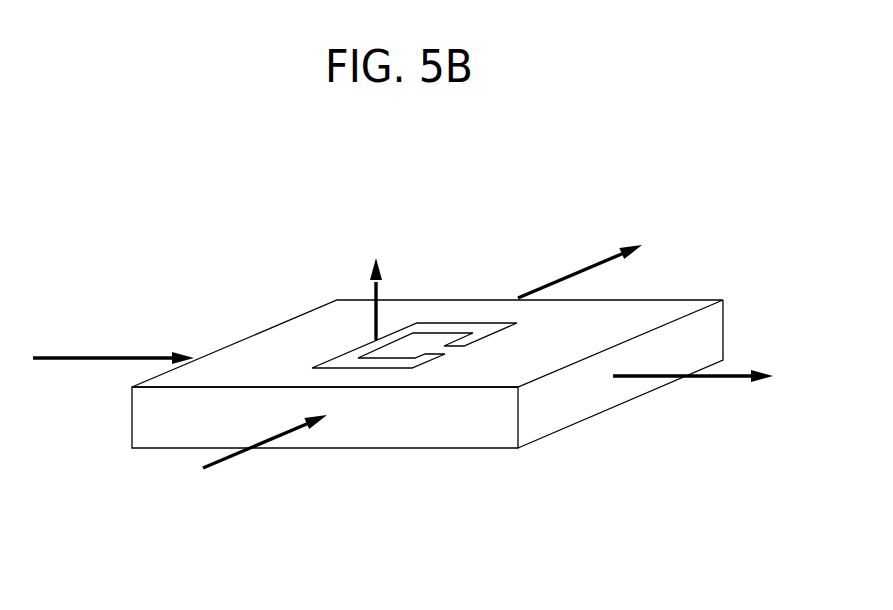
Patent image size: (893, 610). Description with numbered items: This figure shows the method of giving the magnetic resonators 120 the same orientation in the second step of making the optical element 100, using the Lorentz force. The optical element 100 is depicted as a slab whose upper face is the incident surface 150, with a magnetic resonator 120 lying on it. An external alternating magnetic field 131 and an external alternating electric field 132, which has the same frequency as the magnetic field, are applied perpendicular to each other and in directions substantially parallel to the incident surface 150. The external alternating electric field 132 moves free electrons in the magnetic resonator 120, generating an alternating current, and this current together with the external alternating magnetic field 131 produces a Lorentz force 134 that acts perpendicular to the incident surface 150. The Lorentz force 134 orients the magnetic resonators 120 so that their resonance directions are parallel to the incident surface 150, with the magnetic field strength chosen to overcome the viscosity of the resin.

The optical element 100 is at (434, 300).
The magnetic resonator 120 is at (414, 299).
The external alternating magnetic field 131 is at (110, 355).
The external alternating electric field 132 is at (567, 272).
The Lorentz force 134 is at (374, 310).
The incident surface 150 is at (280, 340).